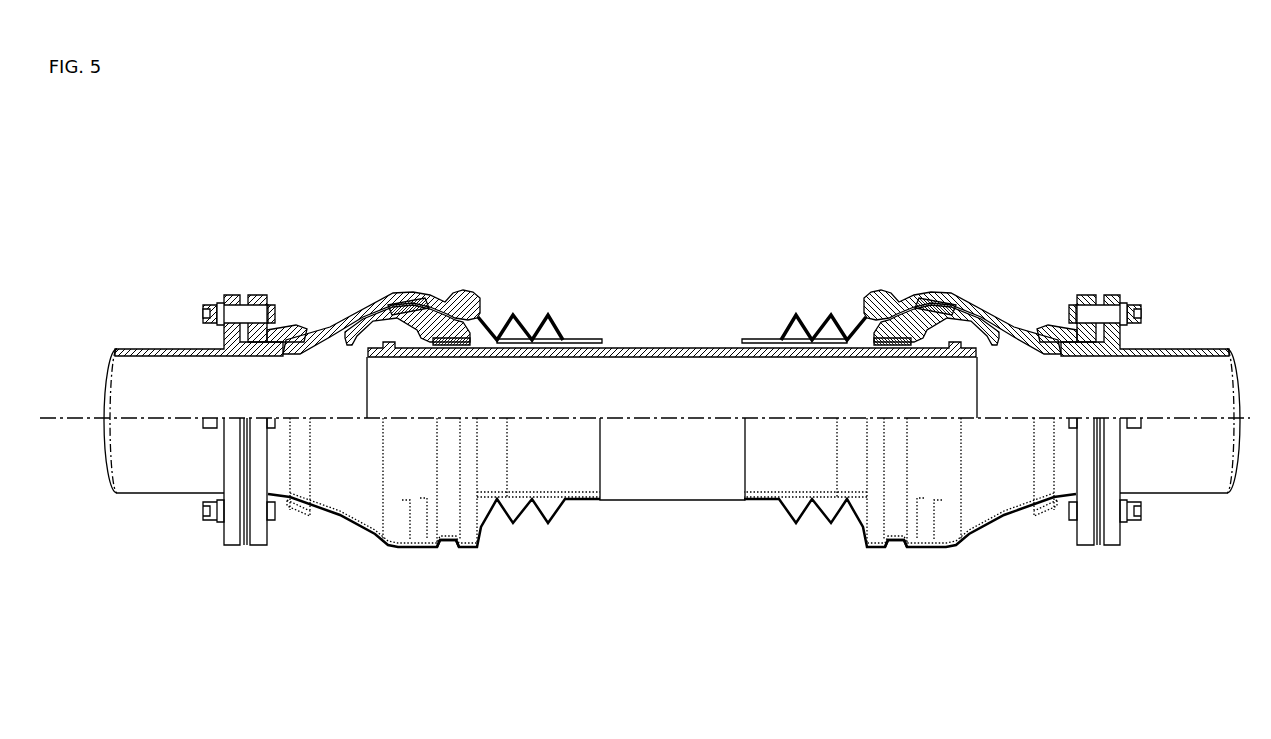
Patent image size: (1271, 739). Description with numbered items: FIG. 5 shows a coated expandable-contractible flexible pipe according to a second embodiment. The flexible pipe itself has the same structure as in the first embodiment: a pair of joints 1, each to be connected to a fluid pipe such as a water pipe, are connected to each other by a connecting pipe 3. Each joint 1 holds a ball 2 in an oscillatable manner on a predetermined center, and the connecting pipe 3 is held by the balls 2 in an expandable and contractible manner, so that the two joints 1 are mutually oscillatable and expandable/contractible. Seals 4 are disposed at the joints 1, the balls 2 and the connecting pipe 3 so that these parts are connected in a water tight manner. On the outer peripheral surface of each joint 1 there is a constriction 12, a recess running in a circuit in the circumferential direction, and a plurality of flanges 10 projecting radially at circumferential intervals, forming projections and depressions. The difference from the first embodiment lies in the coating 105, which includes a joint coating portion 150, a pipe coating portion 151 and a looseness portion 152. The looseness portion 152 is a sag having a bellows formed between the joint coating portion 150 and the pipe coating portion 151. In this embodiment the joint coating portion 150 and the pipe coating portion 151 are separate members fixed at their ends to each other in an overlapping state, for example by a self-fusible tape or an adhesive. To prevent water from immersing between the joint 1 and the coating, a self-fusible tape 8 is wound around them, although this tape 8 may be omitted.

The joint 1 is at (361, 557).
The ball 2 is at (352, 342).
The connecting pipe 3 is at (690, 470).
The seal 4 is at (935, 318).
The self-fusible tape 8 is at (291, 335).
The flange 10 is at (423, 535).
The constriction 12 is at (448, 549).
The coating 105 is at (498, 178).
The joint coating portion 150 is at (420, 291).
The pipe coating portion 151 is at (663, 340).
The looseness portion 152 is at (548, 306).